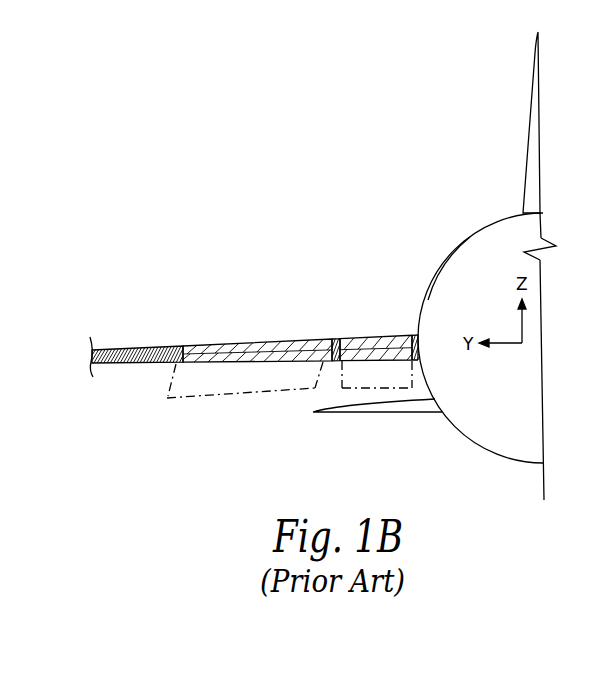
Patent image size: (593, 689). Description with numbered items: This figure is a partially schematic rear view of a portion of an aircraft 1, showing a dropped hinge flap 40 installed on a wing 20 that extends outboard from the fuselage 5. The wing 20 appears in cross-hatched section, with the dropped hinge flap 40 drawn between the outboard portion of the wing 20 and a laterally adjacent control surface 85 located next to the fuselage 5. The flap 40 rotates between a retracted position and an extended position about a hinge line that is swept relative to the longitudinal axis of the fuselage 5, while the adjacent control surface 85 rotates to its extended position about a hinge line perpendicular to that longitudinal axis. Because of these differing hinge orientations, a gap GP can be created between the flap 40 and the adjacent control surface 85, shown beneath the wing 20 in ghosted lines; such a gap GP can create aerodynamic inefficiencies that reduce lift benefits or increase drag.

The aircraft 1 is at (489, 225).
The fuselage 5 is at (456, 256).
The wing 20 is at (140, 347).
The dropped hinge flap 40 is at (280, 340).
The laterally adjacent control surface 85 is at (388, 335).
The gap GP is at (325, 388).